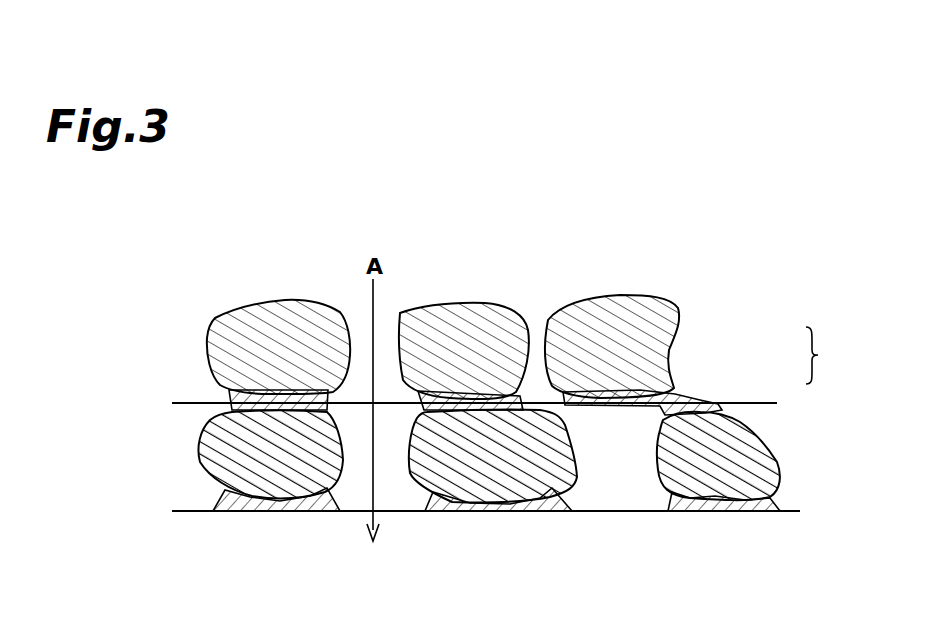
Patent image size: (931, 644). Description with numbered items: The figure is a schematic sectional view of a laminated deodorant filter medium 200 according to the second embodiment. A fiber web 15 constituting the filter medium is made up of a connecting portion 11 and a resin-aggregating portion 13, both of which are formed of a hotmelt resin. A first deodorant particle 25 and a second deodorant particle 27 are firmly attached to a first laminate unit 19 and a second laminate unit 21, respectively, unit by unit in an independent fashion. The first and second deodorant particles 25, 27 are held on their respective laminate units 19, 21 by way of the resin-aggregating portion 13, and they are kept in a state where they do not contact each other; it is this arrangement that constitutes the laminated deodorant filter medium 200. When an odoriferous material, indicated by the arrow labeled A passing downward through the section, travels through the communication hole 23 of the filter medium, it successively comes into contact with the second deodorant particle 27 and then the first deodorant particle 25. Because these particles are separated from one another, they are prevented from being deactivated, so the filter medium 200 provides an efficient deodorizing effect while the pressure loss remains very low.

The laminated deodorant filter medium 200 is at (653, 256).
The second laminate unit 21 is at (214, 319).
The second deodorant particle 27 is at (678, 305).
The first laminate unit 19 is at (198, 450).
The first deodorant particle 25 is at (775, 455).
The communication hole 23 is at (397, 500).
The connecting portion 11 is at (717, 403).
The resin-aggregating portion 13 is at (700, 400).
The fiber web 15 is at (828, 355).